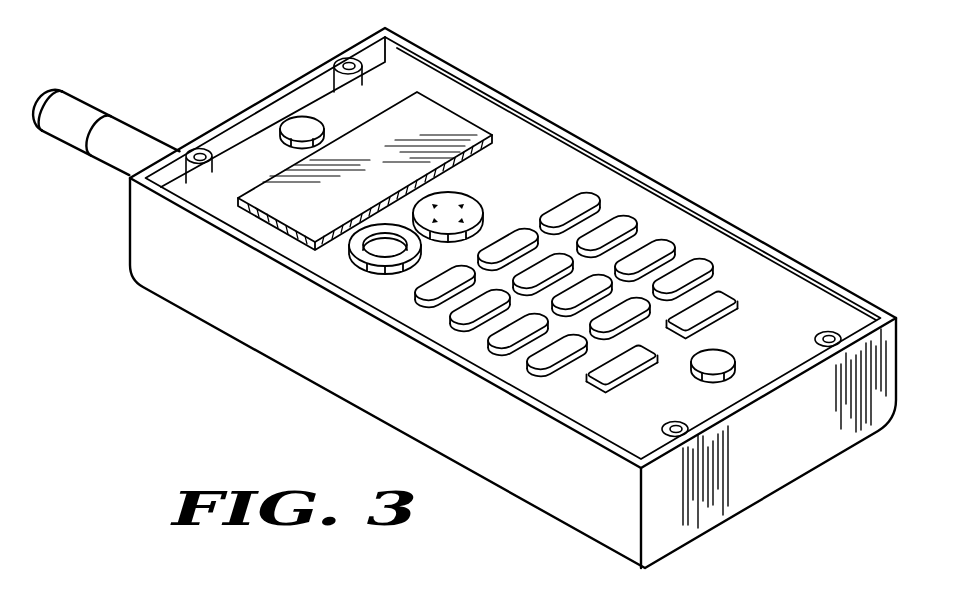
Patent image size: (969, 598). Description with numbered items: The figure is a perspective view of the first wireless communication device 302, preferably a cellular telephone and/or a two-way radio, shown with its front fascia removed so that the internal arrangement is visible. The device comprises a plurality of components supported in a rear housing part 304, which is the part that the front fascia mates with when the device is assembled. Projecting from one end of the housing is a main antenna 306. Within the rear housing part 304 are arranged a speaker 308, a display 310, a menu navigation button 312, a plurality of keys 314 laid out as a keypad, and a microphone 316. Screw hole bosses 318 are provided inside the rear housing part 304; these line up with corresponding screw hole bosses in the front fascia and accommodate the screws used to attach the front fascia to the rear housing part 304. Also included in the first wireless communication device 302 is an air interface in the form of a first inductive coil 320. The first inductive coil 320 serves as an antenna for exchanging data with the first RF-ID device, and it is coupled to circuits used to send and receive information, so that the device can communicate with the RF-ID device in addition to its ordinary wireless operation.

The first wireless communication device 302 is at (247, 450).
The rear housing part 304 is at (433, 403).
The main antenna 306 is at (75, 150).
The speaker 308 is at (294, 122).
The display 310 is at (336, 211).
The menu navigation button 312 is at (482, 198).
The plurality of keys 314 is at (556, 196).
The microphone 316 is at (724, 352).
The screw hole bosses 318 is at (346, 58).
The first inductive coil 320 is at (354, 258).